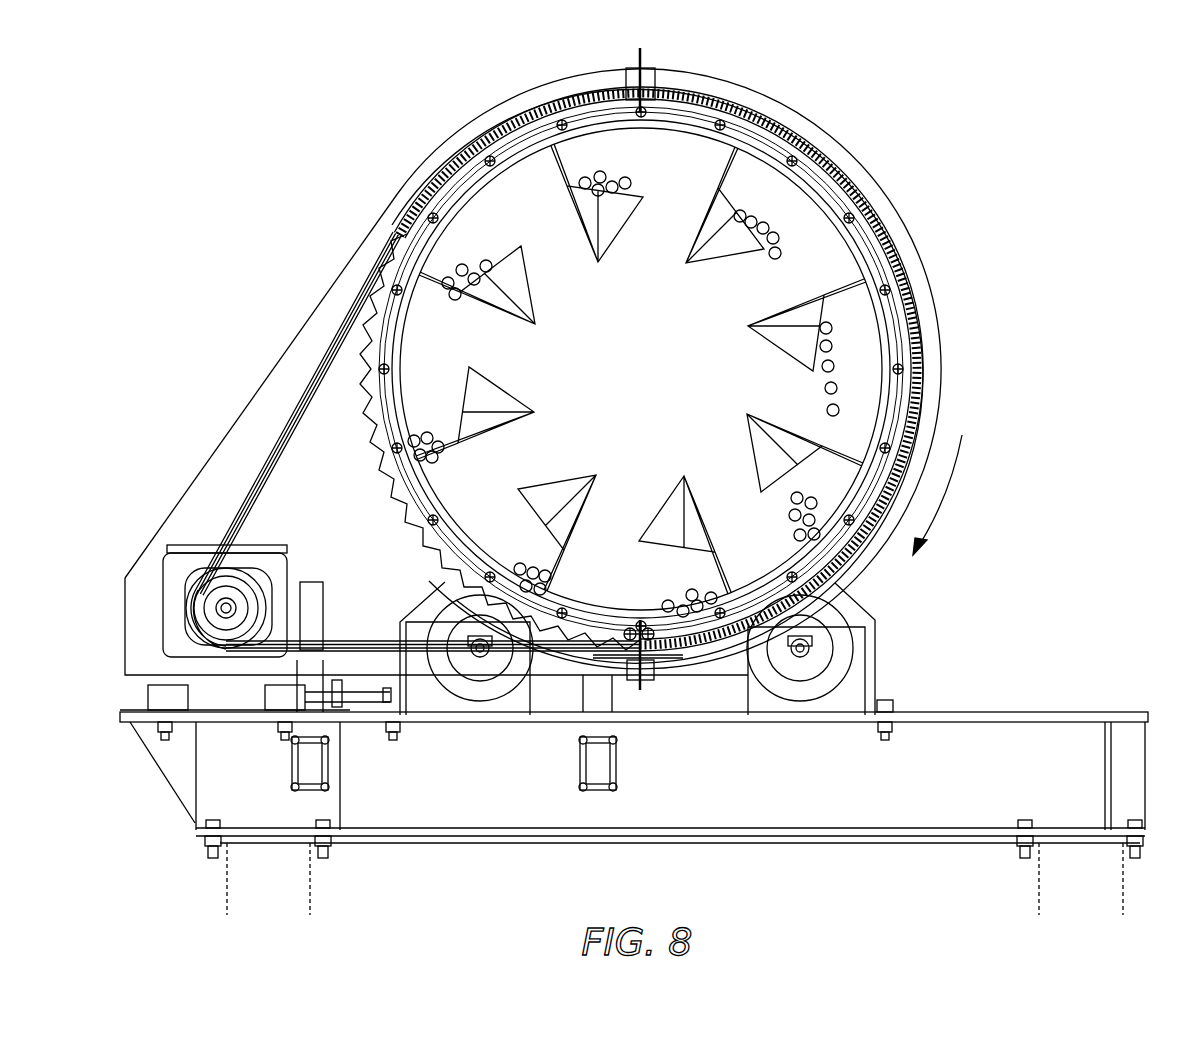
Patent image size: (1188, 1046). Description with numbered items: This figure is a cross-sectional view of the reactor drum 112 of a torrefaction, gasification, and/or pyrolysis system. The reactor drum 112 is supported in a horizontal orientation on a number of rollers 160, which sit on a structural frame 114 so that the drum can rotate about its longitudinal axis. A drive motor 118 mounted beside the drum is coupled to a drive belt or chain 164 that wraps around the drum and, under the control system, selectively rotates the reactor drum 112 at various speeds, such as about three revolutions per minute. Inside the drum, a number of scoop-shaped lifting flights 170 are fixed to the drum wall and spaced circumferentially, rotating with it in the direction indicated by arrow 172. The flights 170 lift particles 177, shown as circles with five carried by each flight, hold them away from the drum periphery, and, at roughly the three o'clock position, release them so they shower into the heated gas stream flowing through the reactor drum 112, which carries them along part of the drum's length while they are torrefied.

The reactor drum 112 is at (960, 140).
The structural frame 114 is at (920, 805).
The drive motor 118 is at (206, 604).
The rollers 160 is at (478, 690).
The drive belt or chain 164 is at (287, 422).
The lifting flights 170 is at (512, 280).
The arrow indicating direction of rotation 172 is at (945, 500).
The particles 177 is at (742, 213).